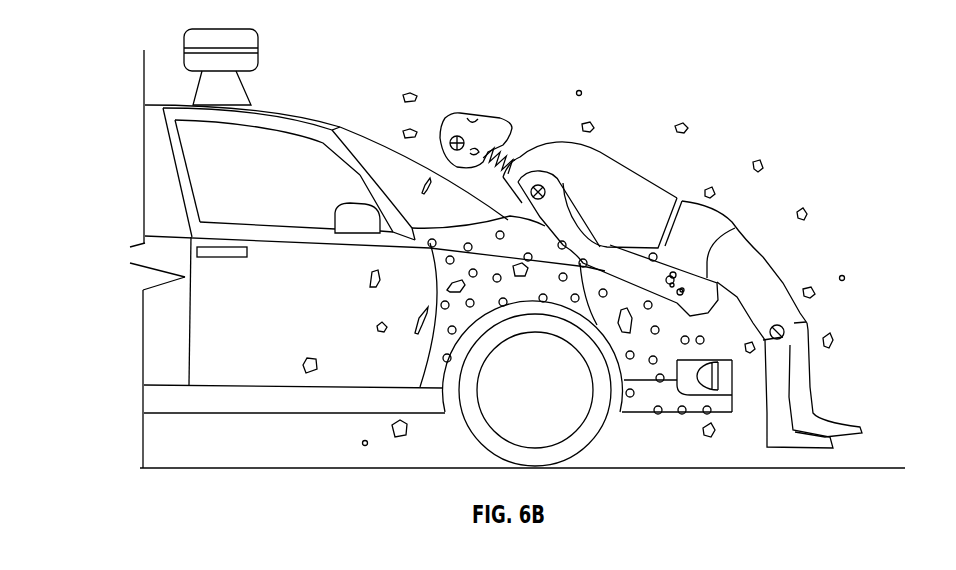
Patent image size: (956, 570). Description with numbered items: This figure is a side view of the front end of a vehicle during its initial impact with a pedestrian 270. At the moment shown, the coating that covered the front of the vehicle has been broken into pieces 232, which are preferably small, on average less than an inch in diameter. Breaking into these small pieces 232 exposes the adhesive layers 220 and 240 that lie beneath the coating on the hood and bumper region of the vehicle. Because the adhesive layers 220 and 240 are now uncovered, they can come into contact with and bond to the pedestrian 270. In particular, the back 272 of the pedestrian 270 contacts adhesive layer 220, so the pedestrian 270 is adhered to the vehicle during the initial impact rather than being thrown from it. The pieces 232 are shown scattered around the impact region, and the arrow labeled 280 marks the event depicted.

The adhesive layer 220 is at (622, 412).
The adhesive layer 240 is at (713, 322).
The pedestrian 270 is at (651, 252).
The back 272 is at (558, 195).
The pieces 232 is at (417, 96).
The collision event 280 is at (688, 70).